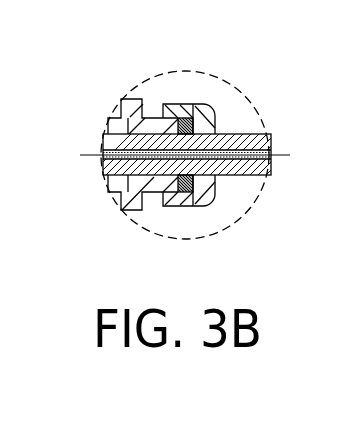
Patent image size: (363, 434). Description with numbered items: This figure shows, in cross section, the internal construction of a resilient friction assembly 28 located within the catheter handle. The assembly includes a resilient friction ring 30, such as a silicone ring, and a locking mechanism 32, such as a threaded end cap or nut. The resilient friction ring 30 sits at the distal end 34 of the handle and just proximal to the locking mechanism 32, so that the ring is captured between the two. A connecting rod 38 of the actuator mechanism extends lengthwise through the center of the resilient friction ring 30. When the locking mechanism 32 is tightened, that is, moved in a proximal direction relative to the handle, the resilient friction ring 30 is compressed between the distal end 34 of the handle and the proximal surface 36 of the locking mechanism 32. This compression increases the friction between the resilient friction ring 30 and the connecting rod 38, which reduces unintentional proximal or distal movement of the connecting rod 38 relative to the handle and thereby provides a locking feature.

The resilient friction assembly 28 is at (222, 209).
The resilient friction ring 30 is at (187, 200).
The locking mechanism 32 is at (182, 118).
The distal end 34 is at (164, 105).
The proximal surface 36 is at (198, 115).
The connecting rod 38 is at (259, 134).